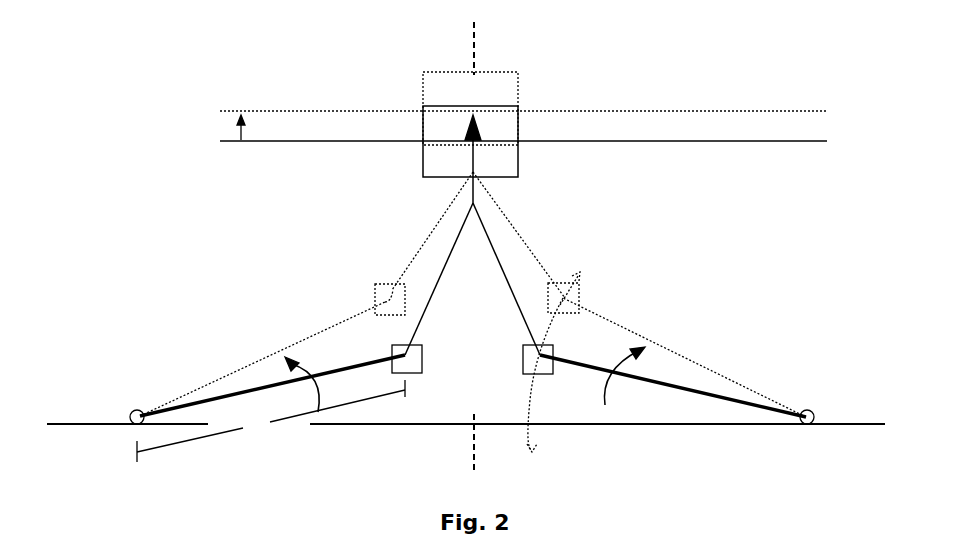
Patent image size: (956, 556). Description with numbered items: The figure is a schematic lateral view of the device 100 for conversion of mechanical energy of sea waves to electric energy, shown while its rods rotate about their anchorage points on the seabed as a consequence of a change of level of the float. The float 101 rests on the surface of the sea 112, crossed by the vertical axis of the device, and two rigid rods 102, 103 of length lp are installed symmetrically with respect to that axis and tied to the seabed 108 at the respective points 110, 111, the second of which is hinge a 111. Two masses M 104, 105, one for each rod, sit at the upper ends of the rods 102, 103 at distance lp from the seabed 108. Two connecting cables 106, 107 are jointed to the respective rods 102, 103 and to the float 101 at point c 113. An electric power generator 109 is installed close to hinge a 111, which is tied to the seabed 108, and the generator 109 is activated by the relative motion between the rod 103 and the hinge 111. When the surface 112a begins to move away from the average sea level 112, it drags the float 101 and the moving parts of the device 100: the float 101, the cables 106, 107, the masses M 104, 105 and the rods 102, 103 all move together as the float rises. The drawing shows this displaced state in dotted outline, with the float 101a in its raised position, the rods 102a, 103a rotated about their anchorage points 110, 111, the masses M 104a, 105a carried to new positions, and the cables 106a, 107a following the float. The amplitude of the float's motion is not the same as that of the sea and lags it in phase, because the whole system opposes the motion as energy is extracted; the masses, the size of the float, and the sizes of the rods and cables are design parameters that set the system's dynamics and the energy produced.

The device for conversion of mechanical energy of sea waves to electric energy 100 is at (220, 257).
The float 101 is at (512, 123).
The float in displaced position 101a is at (487, 72).
The rigid rod 102 is at (173, 403).
The rigid rod in rotated position 102a is at (243, 368).
The rigid rod 103 is at (772, 405).
The rigid rod in rotated position 103a is at (703, 360).
The mass M 104 is at (390, 347).
The mass M in displaced position 104a is at (377, 295).
The mass M 105 is at (553, 350).
The mass M in displaced position 105a is at (582, 295).
The connecting cable 106 is at (442, 270).
The connecting cable in displaced position 106a is at (407, 268).
The connecting cable 107 is at (505, 275).
The connecting cable in displaced position 107a is at (545, 268).
The seabed 108 is at (90, 422).
The electric power generator 109 is at (842, 421).
The anchorage point 110 is at (130, 412).
The hinge a 111 is at (813, 413).
The sea surface 112 is at (687, 139).
The moving sea surface 112a is at (653, 108).
The point c 113 is at (473, 203).